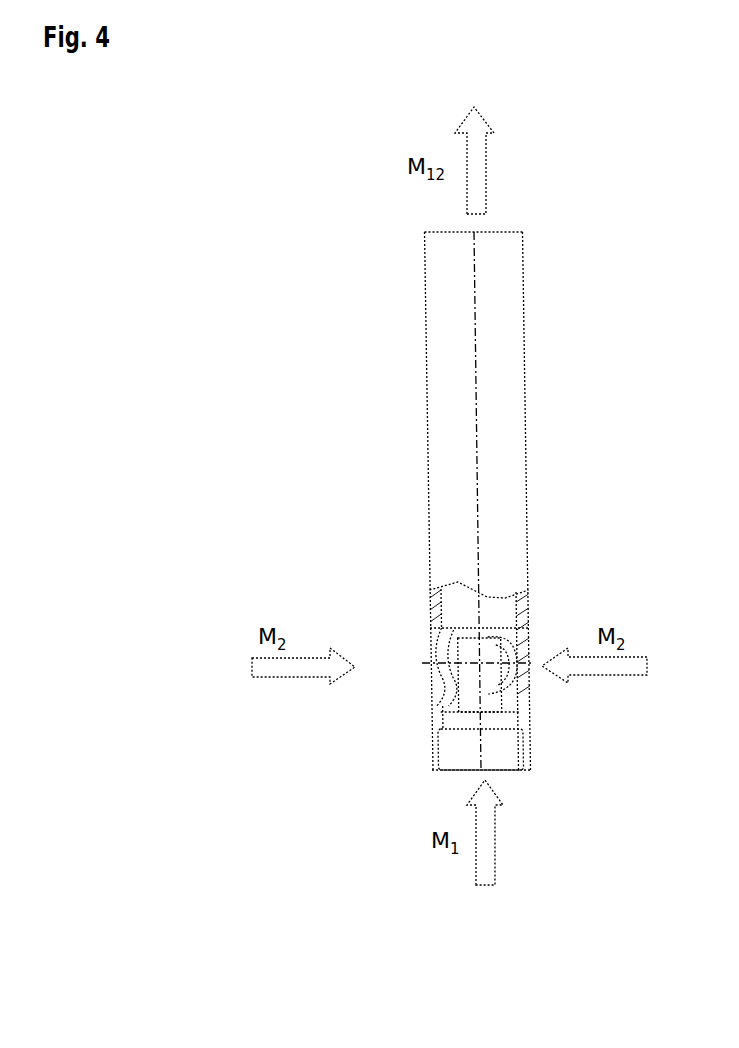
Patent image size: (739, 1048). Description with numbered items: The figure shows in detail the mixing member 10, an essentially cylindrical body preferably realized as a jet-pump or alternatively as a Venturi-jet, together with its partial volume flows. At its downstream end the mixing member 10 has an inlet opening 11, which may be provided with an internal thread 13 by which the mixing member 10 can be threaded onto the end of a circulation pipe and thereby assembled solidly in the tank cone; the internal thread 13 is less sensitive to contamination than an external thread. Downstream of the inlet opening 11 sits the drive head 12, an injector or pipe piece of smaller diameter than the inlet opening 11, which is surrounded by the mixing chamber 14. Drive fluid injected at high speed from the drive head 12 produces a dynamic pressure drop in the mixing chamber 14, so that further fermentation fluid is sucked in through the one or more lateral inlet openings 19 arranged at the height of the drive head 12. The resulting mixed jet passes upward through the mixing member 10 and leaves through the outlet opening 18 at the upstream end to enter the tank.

The mixing member 10 is at (372, 328).
The inlet opening 11 is at (453, 760).
The drive head 12 is at (460, 692).
The internal thread 13 is at (522, 757).
The mixing chamber 14 is at (492, 610).
The outlet opening 18 is at (503, 232).
The lateral inlet opening 19 is at (440, 649).